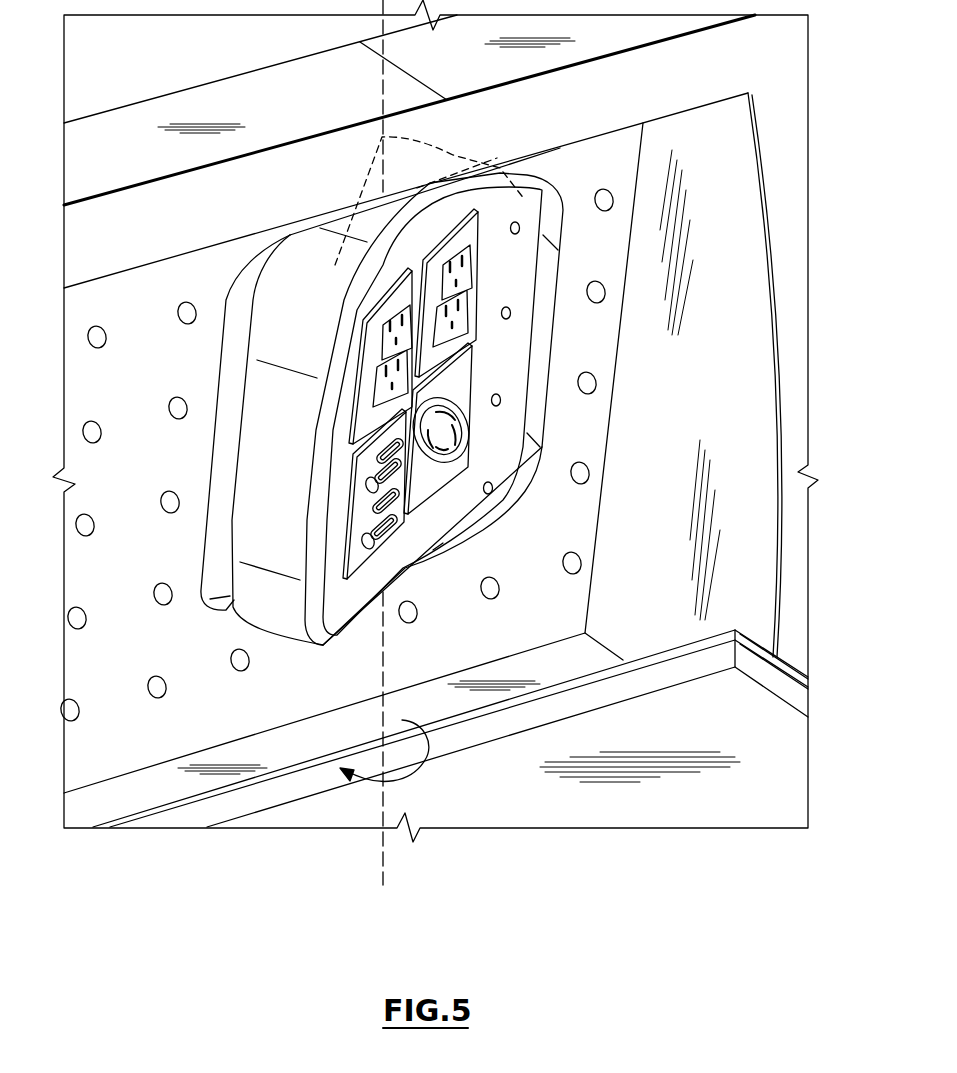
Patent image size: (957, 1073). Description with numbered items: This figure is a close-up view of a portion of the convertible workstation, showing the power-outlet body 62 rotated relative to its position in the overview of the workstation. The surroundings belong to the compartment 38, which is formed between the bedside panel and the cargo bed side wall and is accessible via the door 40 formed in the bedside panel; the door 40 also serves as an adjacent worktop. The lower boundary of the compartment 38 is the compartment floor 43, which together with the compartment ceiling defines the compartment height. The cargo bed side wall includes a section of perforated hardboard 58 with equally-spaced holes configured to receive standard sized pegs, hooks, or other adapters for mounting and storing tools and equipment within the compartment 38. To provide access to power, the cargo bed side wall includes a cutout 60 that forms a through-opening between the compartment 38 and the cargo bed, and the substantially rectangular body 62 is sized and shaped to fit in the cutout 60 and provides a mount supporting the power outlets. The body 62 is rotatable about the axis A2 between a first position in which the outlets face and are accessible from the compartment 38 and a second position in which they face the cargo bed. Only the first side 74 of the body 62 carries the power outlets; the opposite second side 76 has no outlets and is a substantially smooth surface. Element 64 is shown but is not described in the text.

The compartment 38 is at (167, 770).
The door 40 is at (808, 668).
The compartment floor 43 is at (552, 667).
The perforated hardboard 58 is at (143, 329).
The cutout 60 is at (517, 278).
The body 62 is at (427, 241).
The faceplate with outlets 64 is at (375, 342).
The first side 74 is at (487, 197).
The second side 76 is at (248, 373).
The axis A2 is at (348, 450).